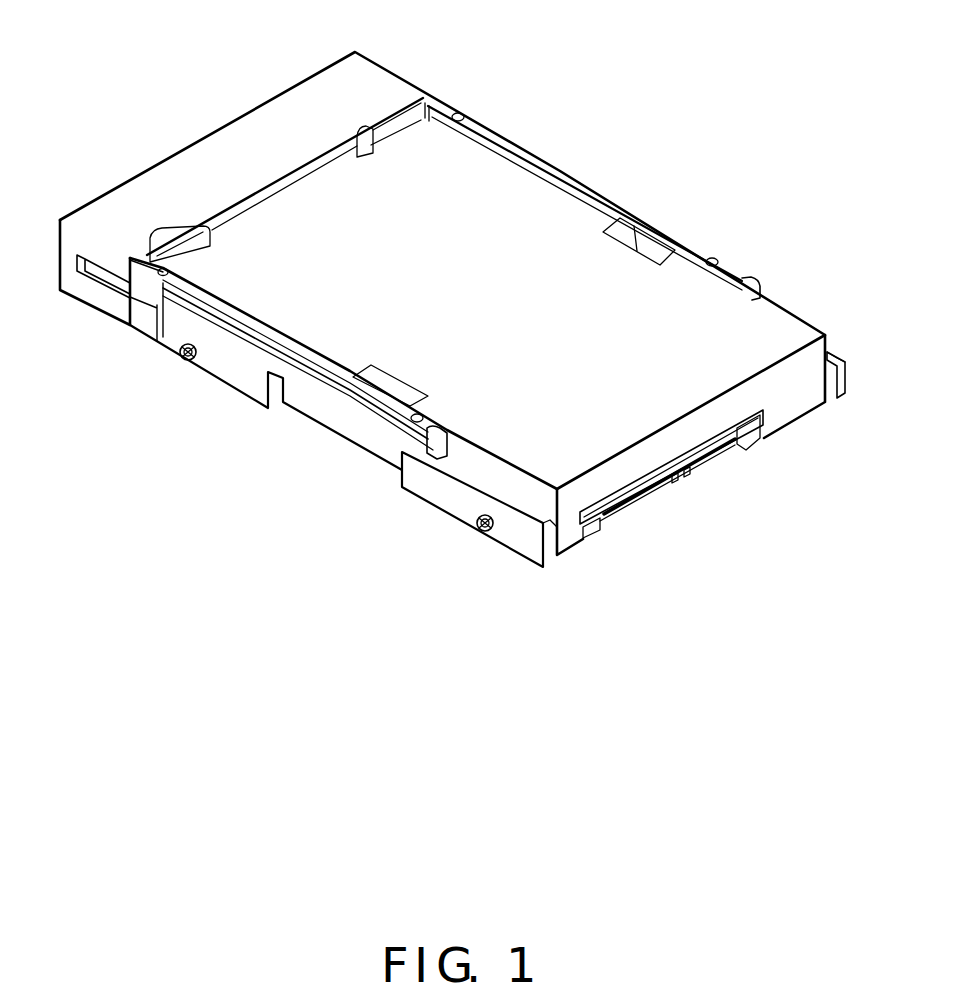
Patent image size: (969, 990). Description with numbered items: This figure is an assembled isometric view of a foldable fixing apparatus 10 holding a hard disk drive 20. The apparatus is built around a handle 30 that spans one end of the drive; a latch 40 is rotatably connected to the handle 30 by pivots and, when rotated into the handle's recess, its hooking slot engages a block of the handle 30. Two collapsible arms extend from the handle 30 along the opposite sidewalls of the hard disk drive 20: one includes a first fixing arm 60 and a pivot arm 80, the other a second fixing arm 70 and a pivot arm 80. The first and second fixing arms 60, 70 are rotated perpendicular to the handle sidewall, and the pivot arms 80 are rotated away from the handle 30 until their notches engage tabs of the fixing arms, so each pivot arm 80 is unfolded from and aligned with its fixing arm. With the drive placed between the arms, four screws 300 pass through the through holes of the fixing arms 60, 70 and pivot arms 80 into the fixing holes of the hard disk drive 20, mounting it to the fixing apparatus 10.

The fixing apparatus 10 is at (388, 65).
The hard disk drive 20 is at (650, 402).
The handle 30 is at (222, 150).
The latch 40 is at (103, 282).
The first fixing arm 60 is at (262, 383).
The second fixing arm 70 is at (571, 177).
The pivot arm 80 is at (438, 488).
The screw 300 is at (181, 356).